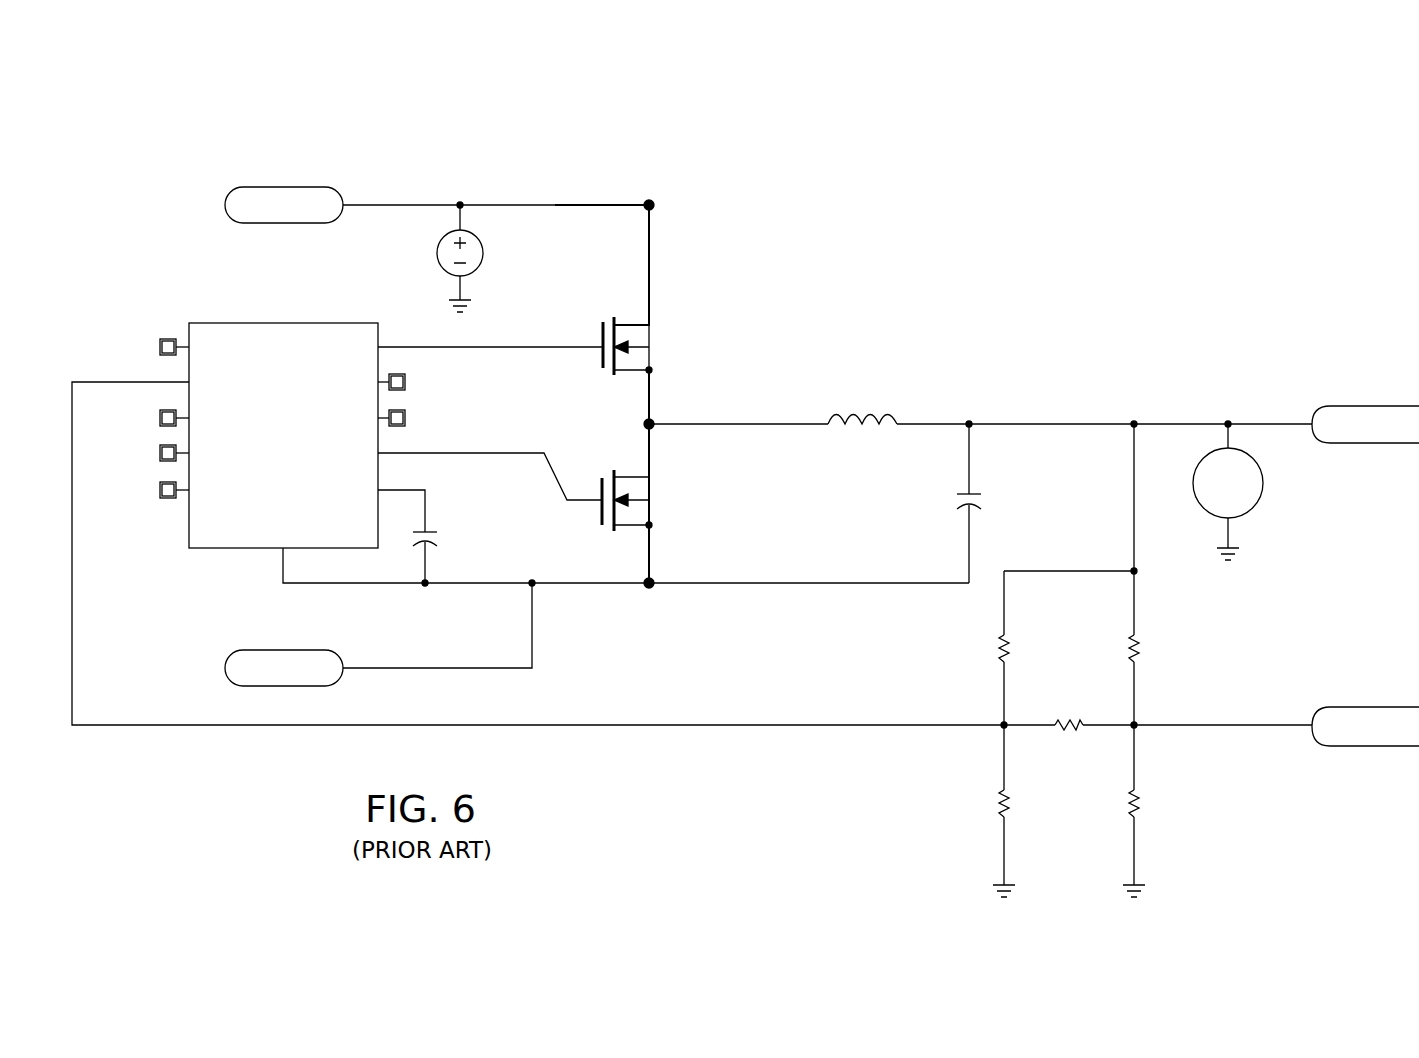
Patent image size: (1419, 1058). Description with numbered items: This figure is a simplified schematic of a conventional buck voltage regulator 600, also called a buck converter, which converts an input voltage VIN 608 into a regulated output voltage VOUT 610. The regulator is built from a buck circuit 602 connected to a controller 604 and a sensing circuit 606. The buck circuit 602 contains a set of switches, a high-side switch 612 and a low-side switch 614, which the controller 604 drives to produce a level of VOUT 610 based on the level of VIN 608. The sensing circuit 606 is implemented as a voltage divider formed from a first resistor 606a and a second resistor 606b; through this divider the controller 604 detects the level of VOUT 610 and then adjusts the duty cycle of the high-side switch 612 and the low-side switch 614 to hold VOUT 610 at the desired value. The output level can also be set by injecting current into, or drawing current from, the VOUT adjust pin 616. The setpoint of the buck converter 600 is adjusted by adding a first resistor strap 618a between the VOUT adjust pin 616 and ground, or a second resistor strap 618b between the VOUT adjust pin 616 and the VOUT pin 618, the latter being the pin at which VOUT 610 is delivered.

The buck voltage regulator 600 is at (1110, 108).
The buck circuit 602 is at (786, 294).
The controller 604 is at (215, 549).
The sensing circuit 606 is at (918, 751).
The resistor R5 606a is at (998, 808).
The resistor R6 606b is at (998, 655).
The VIN 608 is at (517, 172).
The VOUT 610 is at (1102, 388).
The switch S1 612 is at (598, 358).
The switch S3 614 is at (598, 508).
The VOUT adjust pin 616 is at (1365, 750).
The VOUT pin 618 is at (1372, 406).
The resistor strap RS1 618a is at (1140, 808).
The resistor strap RS2 618b is at (1140, 655).